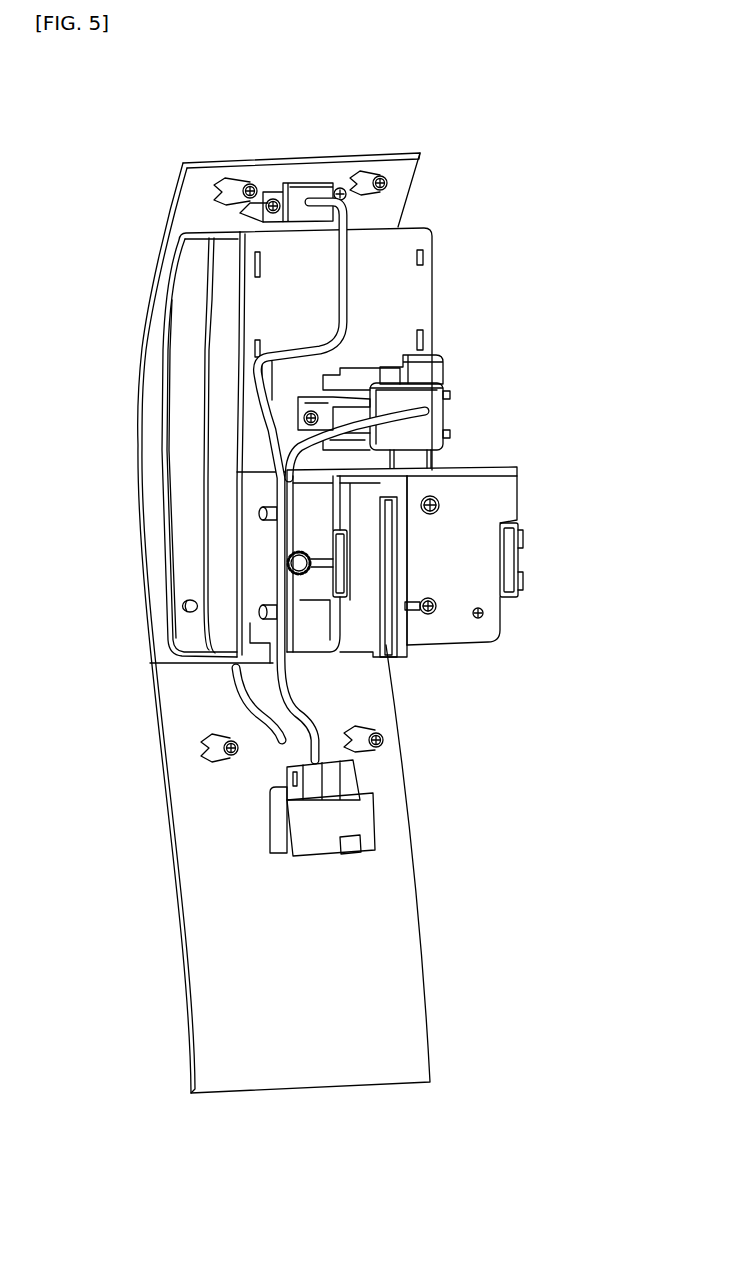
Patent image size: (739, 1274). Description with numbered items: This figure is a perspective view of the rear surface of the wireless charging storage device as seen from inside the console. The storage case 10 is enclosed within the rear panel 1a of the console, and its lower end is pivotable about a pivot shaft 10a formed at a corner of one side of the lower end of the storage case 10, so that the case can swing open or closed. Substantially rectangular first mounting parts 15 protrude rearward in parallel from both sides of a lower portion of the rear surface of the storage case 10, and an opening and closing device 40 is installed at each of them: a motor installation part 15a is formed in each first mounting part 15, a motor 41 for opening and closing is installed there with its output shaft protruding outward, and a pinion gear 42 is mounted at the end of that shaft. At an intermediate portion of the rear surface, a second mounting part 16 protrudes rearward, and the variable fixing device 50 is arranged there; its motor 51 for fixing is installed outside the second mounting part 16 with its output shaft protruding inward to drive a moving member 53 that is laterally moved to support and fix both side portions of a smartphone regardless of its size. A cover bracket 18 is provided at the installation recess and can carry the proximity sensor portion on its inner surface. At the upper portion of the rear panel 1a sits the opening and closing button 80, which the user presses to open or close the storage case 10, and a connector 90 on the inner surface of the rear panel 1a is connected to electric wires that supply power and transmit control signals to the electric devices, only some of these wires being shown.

The rear panel 1a is at (403, 912).
The storage case 10 is at (410, 297).
The pivot shaft 10a is at (183, 606).
The first mounting part 15 is at (467, 543).
The motor installation part 15a is at (333, 533).
The second mounting part 16 is at (430, 373).
The cover bracket 18 is at (218, 352).
The opening and closing device 40 is at (353, 614).
The motor for opening and closing 41 is at (408, 606).
The pinion gear 42 is at (347, 572).
The variable fixing device 50 is at (422, 423).
The motor for fixing 51 is at (445, 388).
The moving member 53 is at (420, 430).
The opening and closing button 80 is at (305, 192).
The connector 90 is at (348, 818).